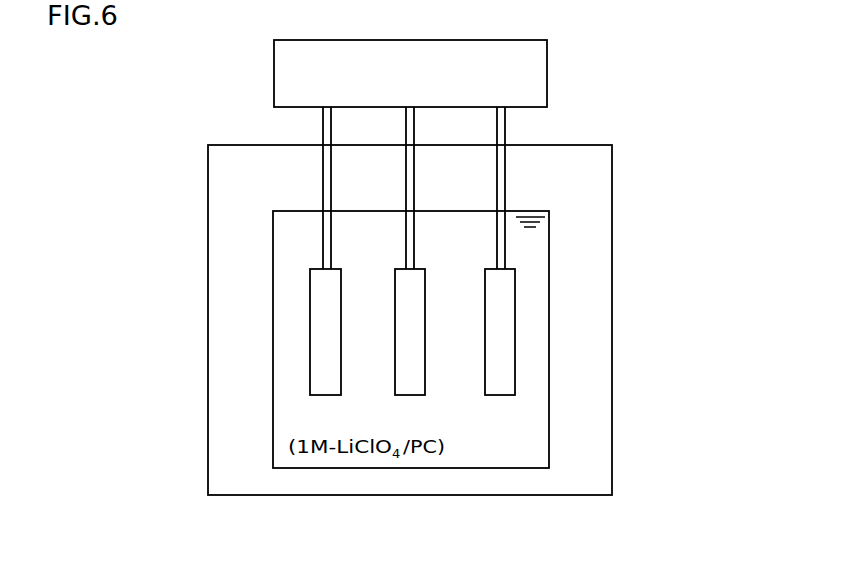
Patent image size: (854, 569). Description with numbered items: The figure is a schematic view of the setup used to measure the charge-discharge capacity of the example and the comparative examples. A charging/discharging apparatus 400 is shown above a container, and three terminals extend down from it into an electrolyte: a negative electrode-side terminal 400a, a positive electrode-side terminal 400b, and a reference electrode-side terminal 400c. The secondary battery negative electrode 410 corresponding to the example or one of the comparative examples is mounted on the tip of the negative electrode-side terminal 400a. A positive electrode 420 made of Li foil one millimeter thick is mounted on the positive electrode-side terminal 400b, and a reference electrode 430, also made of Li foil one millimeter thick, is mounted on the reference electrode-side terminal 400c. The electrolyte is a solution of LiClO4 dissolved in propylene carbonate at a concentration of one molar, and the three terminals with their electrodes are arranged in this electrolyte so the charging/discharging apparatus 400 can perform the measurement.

The charging/discharging apparatus 400 is at (547, 74).
The negative electrode-side terminal 400a is at (497, 167).
The positive electrode-side terminal 400b is at (325, 175).
The reference electrode-side terminal 400c is at (410, 232).
The secondary battery negative electrode 410 is at (500, 332).
The positive electrode 420 is at (326, 292).
The reference electrode 430 is at (407, 343).